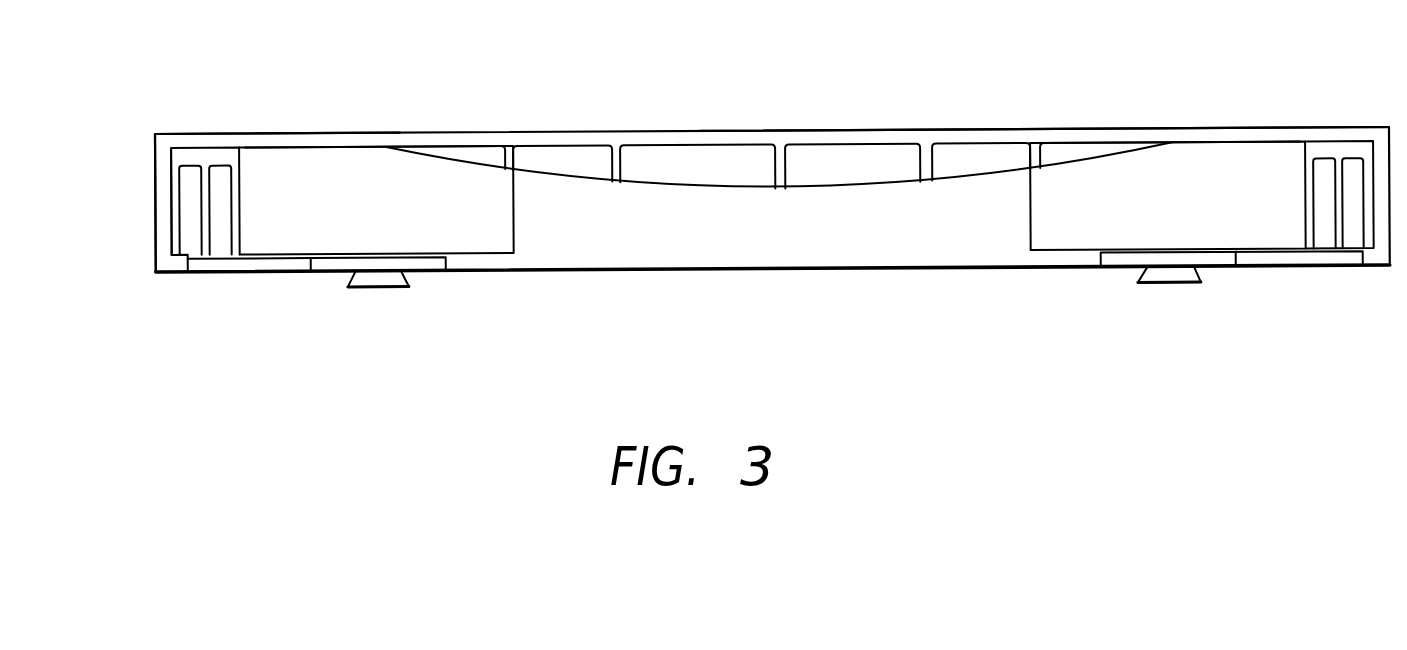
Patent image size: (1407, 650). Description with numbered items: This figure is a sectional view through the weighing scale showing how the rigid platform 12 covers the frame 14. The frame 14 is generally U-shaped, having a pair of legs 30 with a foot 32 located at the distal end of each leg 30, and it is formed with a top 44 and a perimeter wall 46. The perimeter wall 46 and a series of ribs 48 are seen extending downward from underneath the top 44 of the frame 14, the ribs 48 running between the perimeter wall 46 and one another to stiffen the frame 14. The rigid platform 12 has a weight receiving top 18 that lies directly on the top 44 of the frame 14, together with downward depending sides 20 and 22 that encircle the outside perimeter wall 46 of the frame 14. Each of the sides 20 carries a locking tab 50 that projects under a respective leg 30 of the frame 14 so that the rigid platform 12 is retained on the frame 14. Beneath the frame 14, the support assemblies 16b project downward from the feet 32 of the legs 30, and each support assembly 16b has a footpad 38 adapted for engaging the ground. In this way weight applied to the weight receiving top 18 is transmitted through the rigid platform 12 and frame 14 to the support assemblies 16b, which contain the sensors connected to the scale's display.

The rigid platform 12 is at (697, 137).
The frame 14 is at (1217, 167).
The support assemblies 16b is at (422, 260).
The weight receiving top 18 is at (968, 132).
The sides 20 is at (162, 160).
The sides 22 is at (565, 197).
The legs 30 is at (217, 243).
The foot 32 is at (473, 237).
The footpad 38 is at (368, 278).
The top 44 is at (203, 160).
The perimeter wall 46 is at (175, 207).
The ribs 48 is at (207, 243).
The locking tab 50 is at (178, 265).